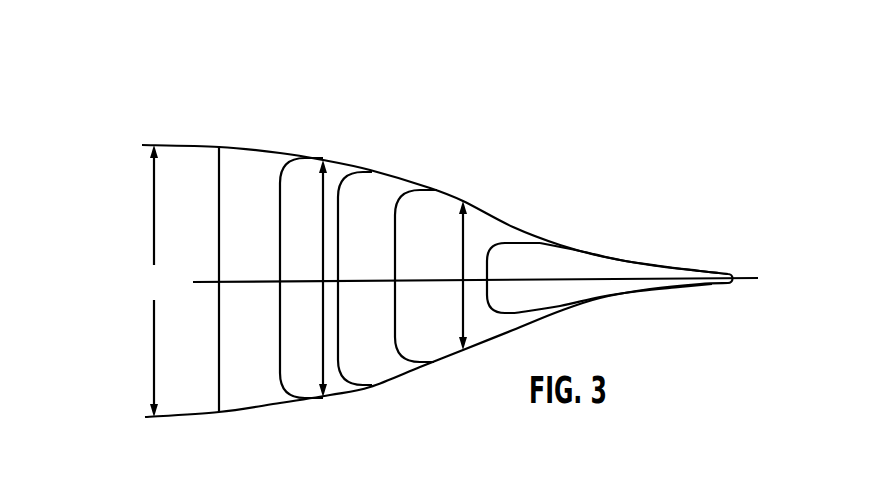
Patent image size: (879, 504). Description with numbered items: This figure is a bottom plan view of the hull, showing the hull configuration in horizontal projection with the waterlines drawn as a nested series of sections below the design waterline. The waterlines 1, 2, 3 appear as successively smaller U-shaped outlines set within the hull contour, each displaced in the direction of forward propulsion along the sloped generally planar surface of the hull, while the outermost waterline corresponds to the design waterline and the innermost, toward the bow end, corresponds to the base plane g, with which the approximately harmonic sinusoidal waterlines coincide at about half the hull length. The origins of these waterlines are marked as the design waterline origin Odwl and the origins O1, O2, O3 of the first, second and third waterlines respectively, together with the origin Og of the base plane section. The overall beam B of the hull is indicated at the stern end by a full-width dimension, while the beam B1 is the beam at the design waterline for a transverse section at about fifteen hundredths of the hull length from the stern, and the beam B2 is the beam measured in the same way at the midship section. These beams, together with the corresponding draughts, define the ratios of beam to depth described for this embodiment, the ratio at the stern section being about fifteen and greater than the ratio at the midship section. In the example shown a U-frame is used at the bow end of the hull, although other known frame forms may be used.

The waterline 1 is at (299, 277).
The waterline 2 is at (388, 296).
The waterline 3 is at (470, 243).
The beam B is at (155, 281).
The beam at section near stern B1 is at (323, 187).
The beam at midship section B2 is at (463, 240).
The base plane g is at (542, 243).
The design waterline origin Odwl is at (219, 333).
The first waterline origin O1 is at (278, 362).
The second waterline origin O2 is at (357, 386).
The third waterline origin O3 is at (395, 304).
The base plane waterline origin Og is at (570, 256).